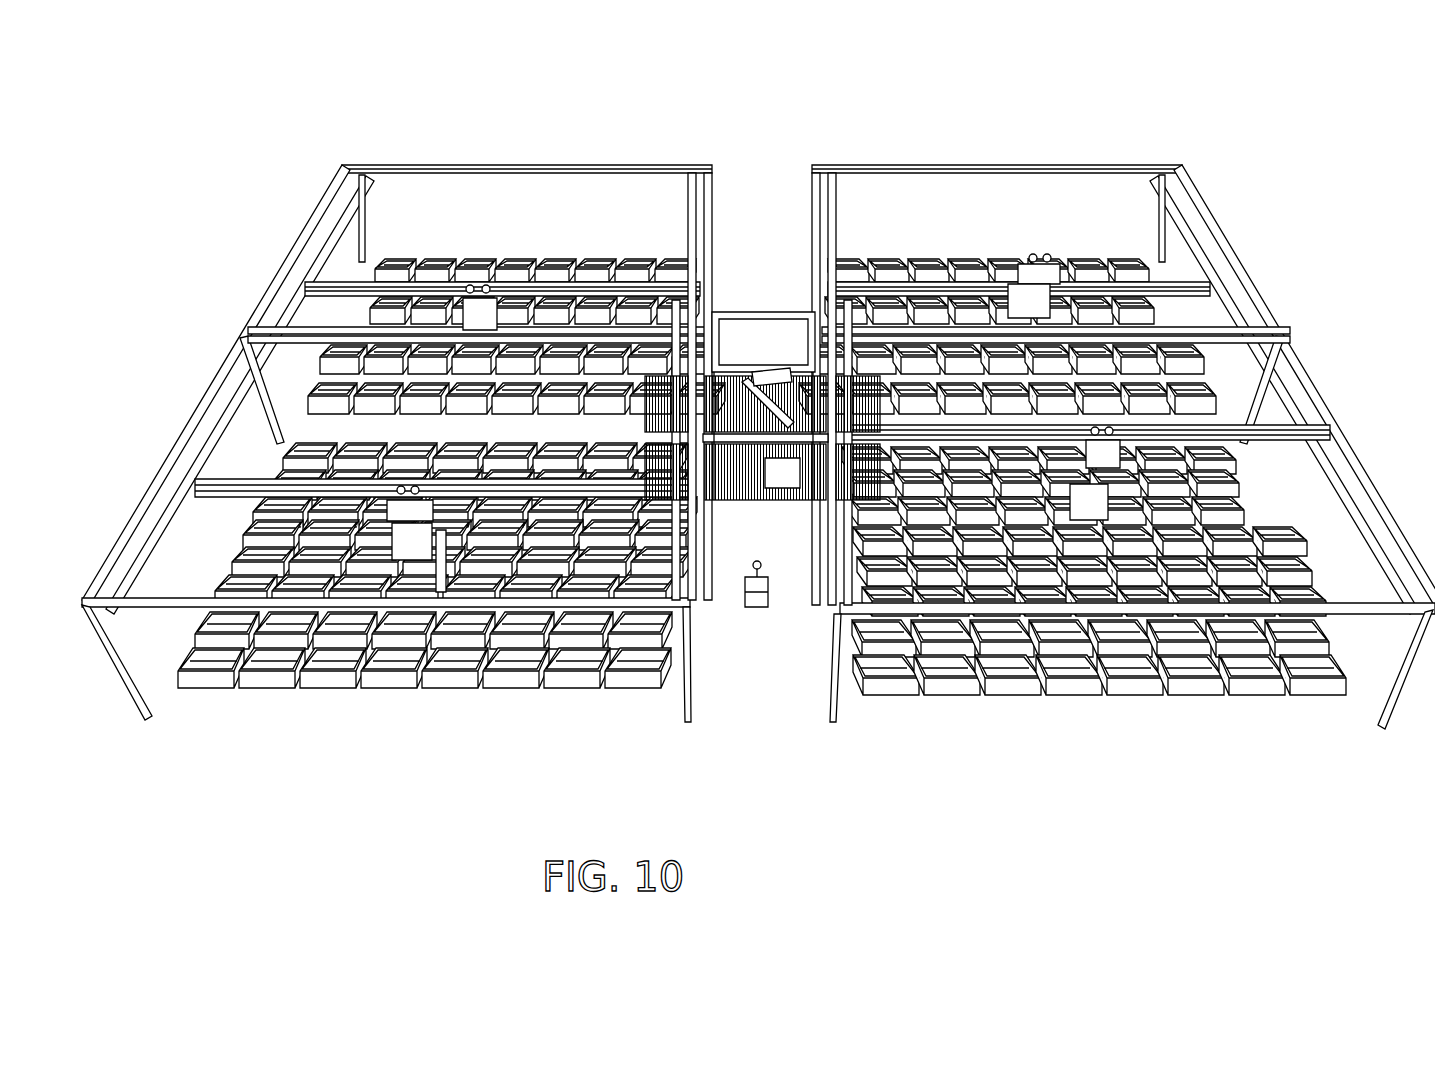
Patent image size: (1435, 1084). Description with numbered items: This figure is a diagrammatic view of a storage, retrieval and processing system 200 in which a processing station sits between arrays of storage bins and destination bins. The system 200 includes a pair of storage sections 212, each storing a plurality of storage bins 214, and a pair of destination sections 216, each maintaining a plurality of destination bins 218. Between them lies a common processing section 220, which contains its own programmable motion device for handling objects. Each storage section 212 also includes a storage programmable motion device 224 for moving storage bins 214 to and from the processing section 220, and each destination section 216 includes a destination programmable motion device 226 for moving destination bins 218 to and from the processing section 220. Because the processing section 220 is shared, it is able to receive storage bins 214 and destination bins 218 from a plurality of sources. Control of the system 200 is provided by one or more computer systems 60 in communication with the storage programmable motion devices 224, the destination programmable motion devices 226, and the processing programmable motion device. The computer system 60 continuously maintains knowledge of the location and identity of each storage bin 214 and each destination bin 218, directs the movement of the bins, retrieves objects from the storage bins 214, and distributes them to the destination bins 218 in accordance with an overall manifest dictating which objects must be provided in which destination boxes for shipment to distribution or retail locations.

The system 200 is at (815, 68).
The storage section 212 is at (1140, 118).
The storage bin 214 is at (1190, 322).
The destination section 216 is at (380, 128).
The destination bin 218 is at (595, 268).
The processing section 220 is at (770, 302).
The storage programmable motion device 224 is at (1042, 268).
The destination programmable motion device 226 is at (478, 300).
The computer system 60 is at (757, 612).